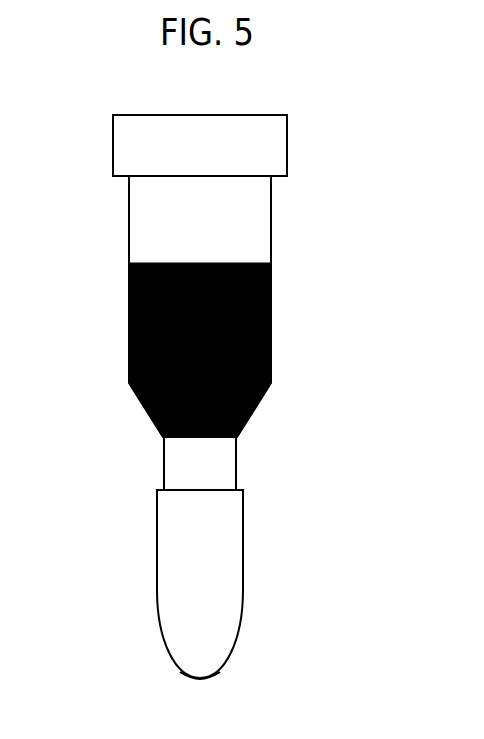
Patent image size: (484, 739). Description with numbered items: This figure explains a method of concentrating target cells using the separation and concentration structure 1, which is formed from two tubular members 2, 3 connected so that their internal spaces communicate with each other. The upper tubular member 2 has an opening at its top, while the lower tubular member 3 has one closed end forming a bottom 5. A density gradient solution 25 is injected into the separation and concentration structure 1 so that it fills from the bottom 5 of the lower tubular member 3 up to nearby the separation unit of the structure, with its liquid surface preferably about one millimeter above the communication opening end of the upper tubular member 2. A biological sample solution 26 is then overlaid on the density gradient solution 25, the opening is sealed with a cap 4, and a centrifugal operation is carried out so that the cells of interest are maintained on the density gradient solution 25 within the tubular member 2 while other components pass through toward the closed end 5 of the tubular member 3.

The separation and concentration structure 1 is at (225, 394).
The tubular member 2 is at (293, 225).
The tubular member 3 is at (248, 543).
The cap 4 is at (308, 141).
The bottom 5 is at (187, 683).
The density gradient solution 25 is at (187, 558).
The biological sample solution 26 is at (272, 323).